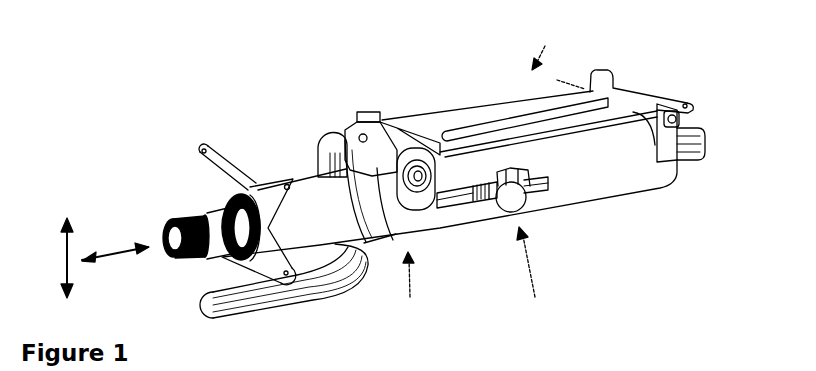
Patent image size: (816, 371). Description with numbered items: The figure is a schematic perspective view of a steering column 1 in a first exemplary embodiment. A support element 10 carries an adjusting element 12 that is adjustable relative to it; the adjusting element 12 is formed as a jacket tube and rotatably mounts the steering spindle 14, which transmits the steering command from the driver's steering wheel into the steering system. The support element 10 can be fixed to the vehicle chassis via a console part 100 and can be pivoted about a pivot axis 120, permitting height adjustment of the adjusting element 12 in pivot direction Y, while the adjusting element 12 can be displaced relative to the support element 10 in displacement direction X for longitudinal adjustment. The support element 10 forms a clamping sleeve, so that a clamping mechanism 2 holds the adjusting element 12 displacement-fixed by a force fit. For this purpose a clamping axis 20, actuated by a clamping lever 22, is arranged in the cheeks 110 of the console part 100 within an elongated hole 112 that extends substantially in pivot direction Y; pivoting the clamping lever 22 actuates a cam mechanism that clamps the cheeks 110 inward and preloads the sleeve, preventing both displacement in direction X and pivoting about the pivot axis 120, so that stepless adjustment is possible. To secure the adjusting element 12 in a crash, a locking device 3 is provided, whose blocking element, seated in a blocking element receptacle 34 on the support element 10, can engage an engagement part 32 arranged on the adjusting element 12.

The steering column 1 is at (558, 60).
The clamping mechanism 2 is at (408, 286).
The locking device 3 is at (529, 273).
The support element 10 is at (588, 178).
The adjusting element 12 is at (317, 190).
The steering spindle 14 is at (215, 207).
The clamping axis 20 is at (429, 200).
The clamping lever 22 is at (322, 291).
The engagement part 32 is at (478, 200).
The blocking element receptacle 34 is at (517, 167).
The console part 100 is at (622, 90).
The cheeks 110 is at (427, 160).
The elongated hole 112 is at (399, 119).
The pivot axis 120 is at (677, 121).
The displacement direction X is at (121, 252).
The pivot direction Y is at (63, 252).